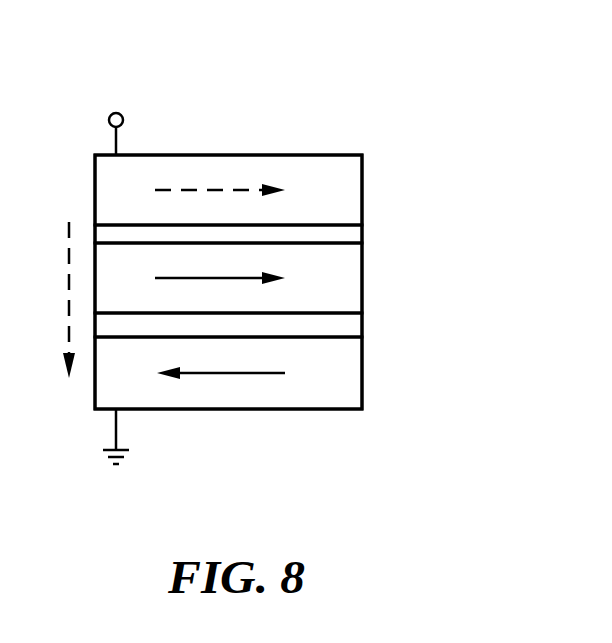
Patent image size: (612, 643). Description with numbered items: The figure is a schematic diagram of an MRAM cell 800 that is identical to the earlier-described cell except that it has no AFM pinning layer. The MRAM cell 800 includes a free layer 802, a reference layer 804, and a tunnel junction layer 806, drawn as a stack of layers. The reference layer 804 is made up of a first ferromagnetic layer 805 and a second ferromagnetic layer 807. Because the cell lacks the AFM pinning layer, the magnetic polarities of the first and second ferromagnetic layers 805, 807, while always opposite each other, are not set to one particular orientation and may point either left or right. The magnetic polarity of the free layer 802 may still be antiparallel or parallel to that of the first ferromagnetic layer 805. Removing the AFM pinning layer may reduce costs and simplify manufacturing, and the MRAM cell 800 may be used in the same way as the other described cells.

The MRAM cell 800 is at (404, 89).
The free layer 802 is at (350, 191).
The reference layer 804 is at (372, 245).
The first ferromagnetic layer 805 is at (350, 281).
The tunnel junction layer 806 is at (362, 233).
The second ferromagnetic layer 807 is at (350, 372).